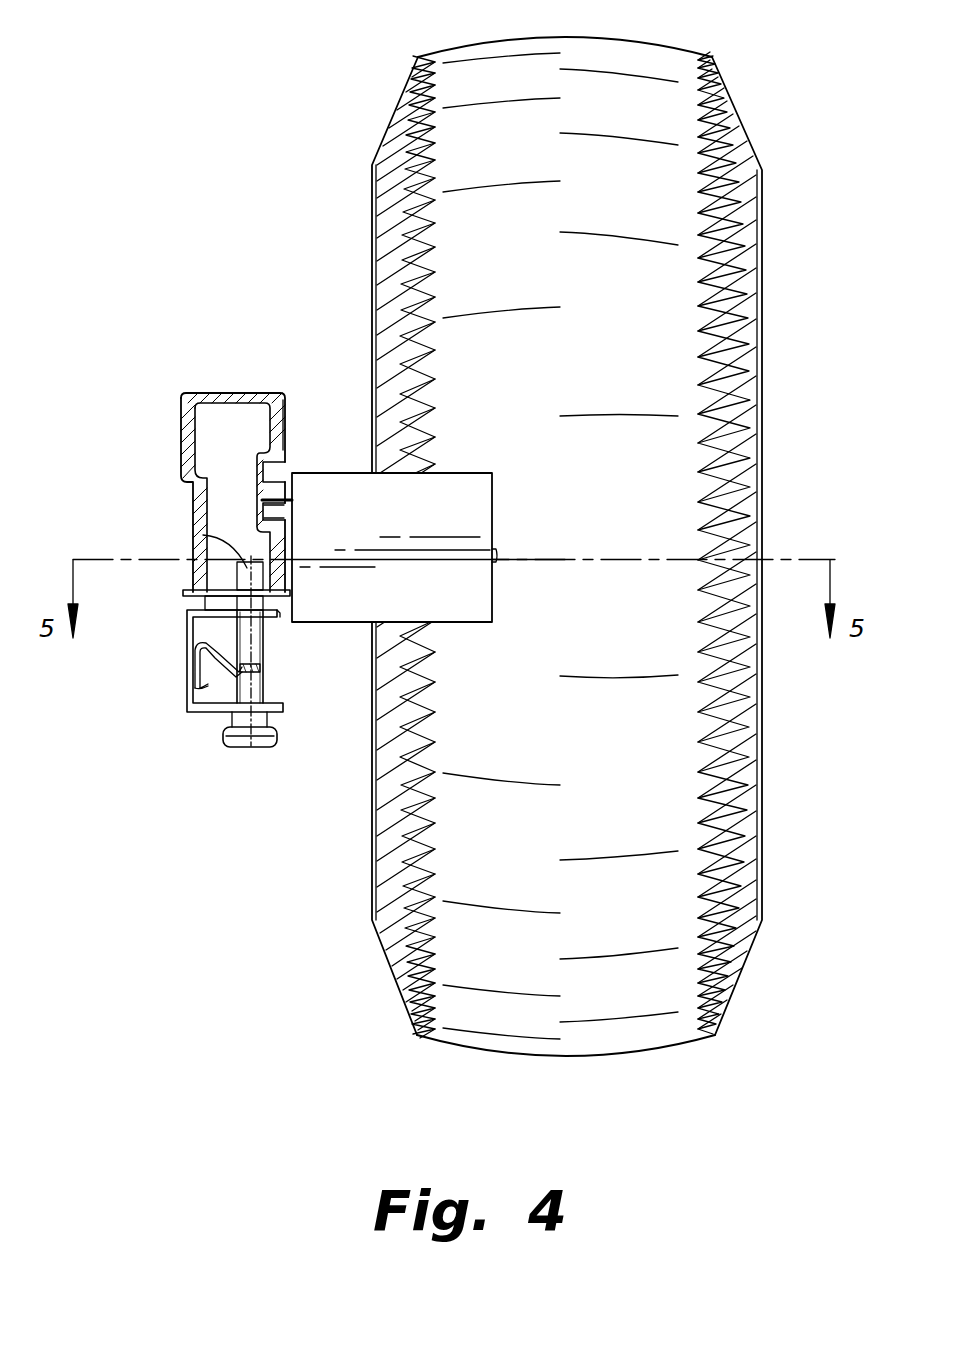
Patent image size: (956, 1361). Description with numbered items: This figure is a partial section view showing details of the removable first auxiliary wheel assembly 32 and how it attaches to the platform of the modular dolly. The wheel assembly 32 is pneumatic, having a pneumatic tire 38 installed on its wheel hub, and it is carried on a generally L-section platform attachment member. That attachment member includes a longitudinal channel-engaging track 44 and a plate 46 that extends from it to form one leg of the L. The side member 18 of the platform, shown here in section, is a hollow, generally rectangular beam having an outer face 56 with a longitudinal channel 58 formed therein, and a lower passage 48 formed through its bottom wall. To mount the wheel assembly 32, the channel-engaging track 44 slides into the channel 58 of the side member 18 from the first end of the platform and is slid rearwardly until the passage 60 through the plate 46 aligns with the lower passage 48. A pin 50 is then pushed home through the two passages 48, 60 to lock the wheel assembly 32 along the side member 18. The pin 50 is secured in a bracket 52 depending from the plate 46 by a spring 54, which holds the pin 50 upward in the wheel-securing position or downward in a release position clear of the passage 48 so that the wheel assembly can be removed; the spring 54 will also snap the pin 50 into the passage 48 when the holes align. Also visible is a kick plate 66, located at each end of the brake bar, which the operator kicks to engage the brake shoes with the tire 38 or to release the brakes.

The side member 18 is at (232, 393).
The outer face 56 is at (288, 422).
The channel-engaging track 44 is at (270, 459).
The longitudinal channel 58 is at (287, 507).
The lower passage 48 is at (200, 537).
The plate 46 is at (185, 598).
The passage 60 is at (263, 603).
The bracket 52 is at (188, 696).
The pin 50 is at (265, 668).
The spring 54 is at (197, 650).
The first auxiliary wheel assembly 32 is at (188, 1065).
The pneumatic tire 38 is at (690, 1042).
The kick plate 66 is at (466, 508).